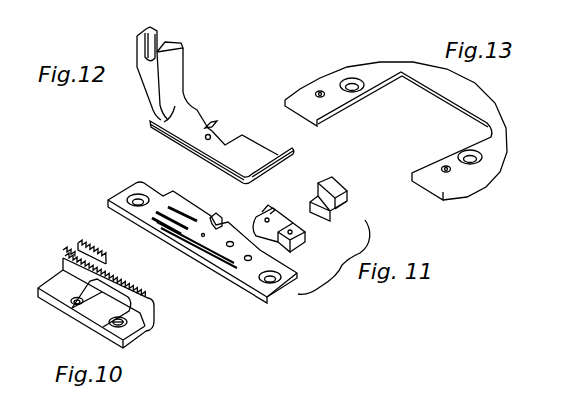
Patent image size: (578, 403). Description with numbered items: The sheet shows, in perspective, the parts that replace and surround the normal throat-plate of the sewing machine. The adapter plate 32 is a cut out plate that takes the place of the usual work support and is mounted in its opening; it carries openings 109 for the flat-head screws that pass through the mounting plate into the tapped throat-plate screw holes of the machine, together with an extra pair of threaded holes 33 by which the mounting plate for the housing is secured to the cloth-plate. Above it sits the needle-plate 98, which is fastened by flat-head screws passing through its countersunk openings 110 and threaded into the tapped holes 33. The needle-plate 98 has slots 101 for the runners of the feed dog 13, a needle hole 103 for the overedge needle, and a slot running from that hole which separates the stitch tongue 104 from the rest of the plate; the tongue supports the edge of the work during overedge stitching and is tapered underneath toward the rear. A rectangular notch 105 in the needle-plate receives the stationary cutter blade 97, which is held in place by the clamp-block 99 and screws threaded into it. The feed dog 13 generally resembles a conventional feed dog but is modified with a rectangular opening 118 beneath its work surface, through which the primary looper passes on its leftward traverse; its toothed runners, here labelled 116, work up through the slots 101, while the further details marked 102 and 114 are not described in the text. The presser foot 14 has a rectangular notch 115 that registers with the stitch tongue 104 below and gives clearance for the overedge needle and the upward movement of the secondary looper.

In FIG. 10, the feed dog 13 is at (140, 335).
In FIG. 12, the presser foot 14 is at (230, 157).
In FIG. 13, the adapter plate 32 is at (484, 88).
In FIG. 13, the holes 33 is at (316, 92).
In FIG. 11, the stationary cutter blade 97 is at (332, 178).
In FIG. 11, the needle-plate 98 is at (233, 273).
In FIG. 11, the clamp-block 99 is at (306, 238).
In FIG. 11, the slots 101 is at (197, 212).
In FIG. 11, the elongated slot 102 is at (203, 238).
In FIG. 11, the needle hole 103 is at (214, 217).
In FIG. 11, the stitch tongue 104 is at (221, 227).
In FIG. 11, the rectangular notch 105 is at (233, 240).
In FIG. 13, the openings 109 is at (355, 78).
In FIG. 11, the countersunk openings 110 is at (128, 187).
In FIG. 12, the spring tab 114 is at (214, 124).
In FIG. 12, the rectangular notch 115 is at (226, 143).
In FIG. 10, the feed teeth 116 is at (97, 245).
In FIG. 10, the rectangular opening 118 is at (110, 298).